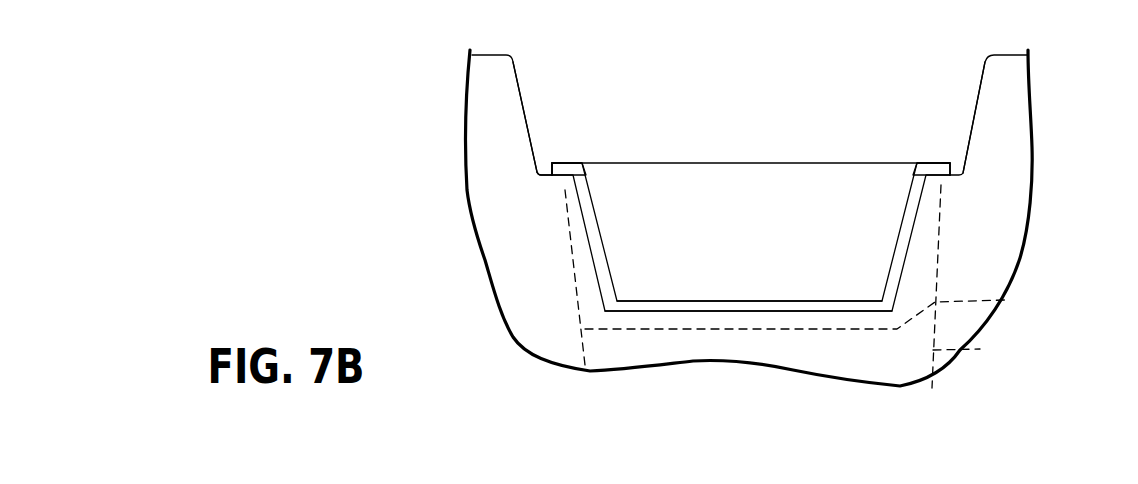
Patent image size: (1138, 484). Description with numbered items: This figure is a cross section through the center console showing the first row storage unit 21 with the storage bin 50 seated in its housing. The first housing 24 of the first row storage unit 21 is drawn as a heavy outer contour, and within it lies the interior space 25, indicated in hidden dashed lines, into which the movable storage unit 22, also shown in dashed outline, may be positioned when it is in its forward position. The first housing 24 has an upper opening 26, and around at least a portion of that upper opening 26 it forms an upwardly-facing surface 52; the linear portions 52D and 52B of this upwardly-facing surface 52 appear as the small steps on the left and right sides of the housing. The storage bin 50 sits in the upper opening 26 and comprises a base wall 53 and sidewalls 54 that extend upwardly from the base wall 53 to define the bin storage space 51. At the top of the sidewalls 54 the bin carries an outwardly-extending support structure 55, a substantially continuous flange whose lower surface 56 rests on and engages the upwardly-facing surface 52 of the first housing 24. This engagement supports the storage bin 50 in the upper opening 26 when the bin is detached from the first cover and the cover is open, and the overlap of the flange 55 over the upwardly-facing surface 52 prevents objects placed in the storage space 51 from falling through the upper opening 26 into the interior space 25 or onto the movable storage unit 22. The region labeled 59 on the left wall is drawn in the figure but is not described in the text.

The first row storage unit 21 is at (1003, 48).
The movable storage unit 22 is at (980, 349).
The first housing 24 is at (977, 97).
The interior space 25 is at (1005, 300).
The upper opening 26 is at (717, 110).
The storage bin 50 is at (604, 223).
The storage space 51 is at (697, 252).
The upwardly-facing surface 52 is at (542, 166).
The linear portion of upwardly-facing surface 52B is at (960, 170).
The linear portion of upwardly-facing surface 52D is at (550, 167).
The base wall 53 is at (743, 303).
The sidewalls 54 is at (920, 240).
The support structure 55 is at (573, 163).
The lower surface 56 is at (552, 175).
The left wall portion 59 is at (573, 247).